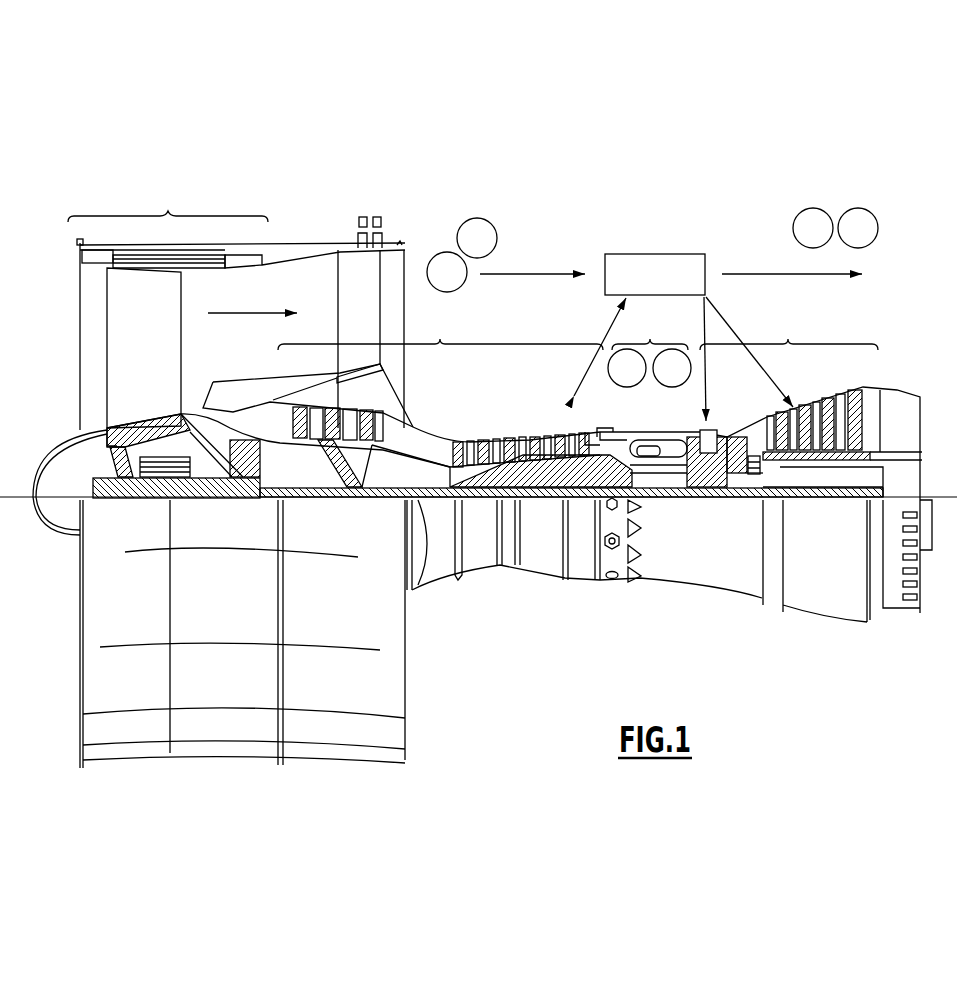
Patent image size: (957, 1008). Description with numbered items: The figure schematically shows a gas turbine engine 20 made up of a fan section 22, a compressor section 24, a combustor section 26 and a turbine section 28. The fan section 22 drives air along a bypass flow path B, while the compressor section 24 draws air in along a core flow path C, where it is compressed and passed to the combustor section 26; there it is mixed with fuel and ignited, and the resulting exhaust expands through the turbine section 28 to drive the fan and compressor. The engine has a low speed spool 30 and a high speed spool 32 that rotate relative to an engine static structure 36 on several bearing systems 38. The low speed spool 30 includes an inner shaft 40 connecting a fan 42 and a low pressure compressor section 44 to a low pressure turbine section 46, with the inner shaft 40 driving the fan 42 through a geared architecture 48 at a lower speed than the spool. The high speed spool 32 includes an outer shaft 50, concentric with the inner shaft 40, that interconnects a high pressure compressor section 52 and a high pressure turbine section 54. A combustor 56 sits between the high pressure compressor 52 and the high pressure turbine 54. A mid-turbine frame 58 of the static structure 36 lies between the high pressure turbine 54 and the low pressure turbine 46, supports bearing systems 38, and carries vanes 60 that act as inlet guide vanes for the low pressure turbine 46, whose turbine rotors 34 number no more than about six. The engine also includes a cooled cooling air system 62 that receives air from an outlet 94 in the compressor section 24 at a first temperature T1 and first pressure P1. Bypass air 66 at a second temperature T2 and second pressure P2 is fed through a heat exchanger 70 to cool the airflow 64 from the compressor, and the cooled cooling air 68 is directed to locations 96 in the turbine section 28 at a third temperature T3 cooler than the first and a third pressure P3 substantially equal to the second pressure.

The gas turbine engine 20 is at (424, 158).
The fan section 22 is at (150, 358).
The compressor section 24 is at (440, 372).
The combustor section 26 is at (650, 326).
The turbine section 28 is at (789, 326).
The low speed spool 30 is at (546, 505).
The high speed spool 32 is at (585, 437).
The turbine rotor 34 is at (880, 467).
The engine static structure 36 is at (580, 579).
The bearing systems 38 is at (148, 500).
The inner shaft 40 is at (427, 585).
The fan 42 is at (157, 364).
The low pressure compressor section 44 is at (345, 413).
The low pressure turbine section 46 is at (824, 410).
The geared architecture 48 is at (248, 500).
The outer shaft 50 is at (662, 494).
The high pressure compressor section 52 is at (516, 445).
The high pressure turbine section 54 is at (703, 421).
The combustor 56 is at (654, 450).
The mid-turbine frame 58 is at (747, 417).
The vanes 60 is at (777, 495).
The cooled cooling air system 62 is at (786, 195).
The airflow 64 is at (594, 360).
The bypass air 66 is at (521, 274).
The cooled cooling air 68 is at (733, 335).
The heat exchanger 70 is at (641, 285).
The outlet 94 is at (555, 430).
The locations 96 is at (715, 425).
The bypass flow path B is at (241, 312).
The core flow path C is at (250, 410).
The first temperature T1 is at (627, 368).
The first pressure P1 is at (672, 368).
The second temperature T2 is at (477, 238).
The second pressure P2 is at (447, 272).
The third temperature T3 is at (716, 310).
The third pressure P3 is at (858, 228).